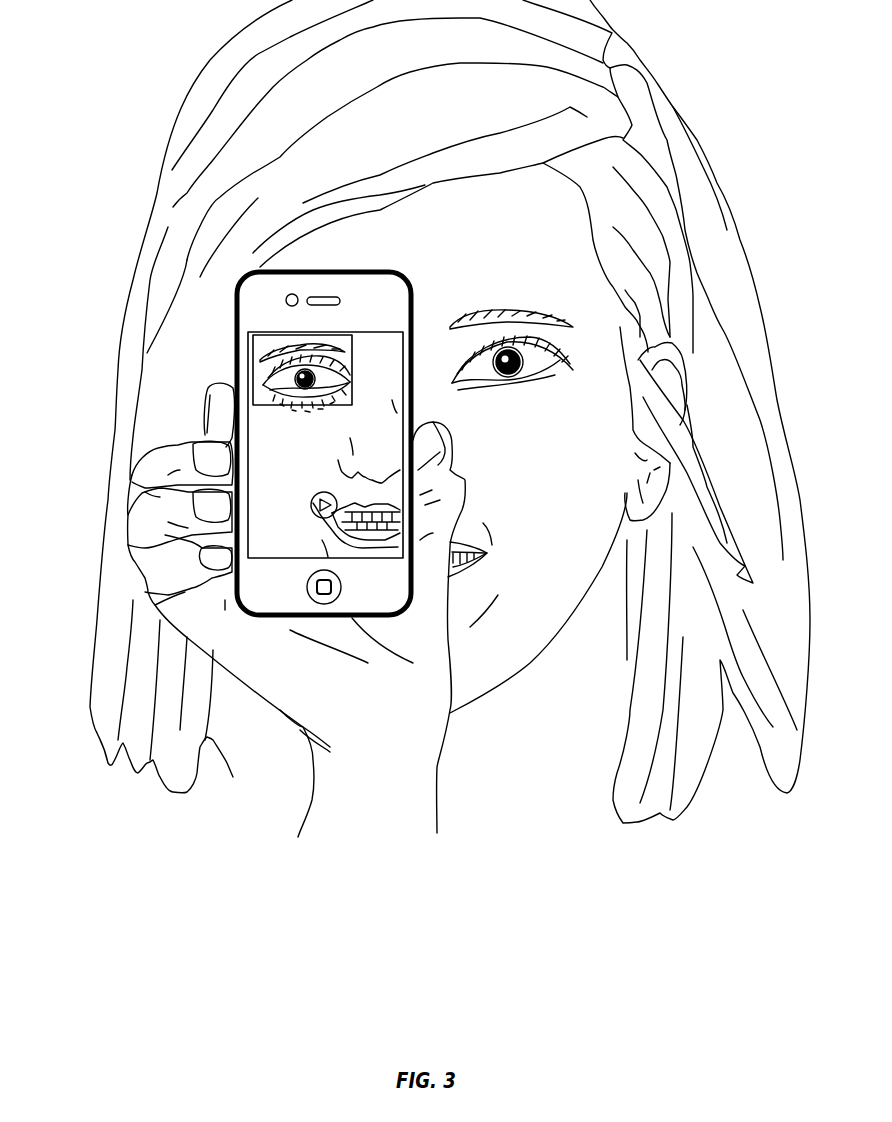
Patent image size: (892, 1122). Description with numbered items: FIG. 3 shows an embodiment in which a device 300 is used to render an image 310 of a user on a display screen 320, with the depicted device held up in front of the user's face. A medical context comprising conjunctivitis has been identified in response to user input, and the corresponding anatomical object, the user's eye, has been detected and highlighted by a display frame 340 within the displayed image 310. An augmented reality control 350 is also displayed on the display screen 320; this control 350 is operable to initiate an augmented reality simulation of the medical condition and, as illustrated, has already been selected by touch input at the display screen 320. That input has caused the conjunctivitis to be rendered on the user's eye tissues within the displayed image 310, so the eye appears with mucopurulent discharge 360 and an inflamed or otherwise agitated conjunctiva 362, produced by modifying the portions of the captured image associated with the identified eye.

The device 300 is at (397, 310).
The image 310 is at (386, 453).
The display screen 320 is at (277, 542).
The display frame 340 is at (362, 350).
The augmented reality control 350 is at (313, 500).
The mucopurulent discharge 360 is at (290, 395).
The conjunctiva 362 is at (282, 380).